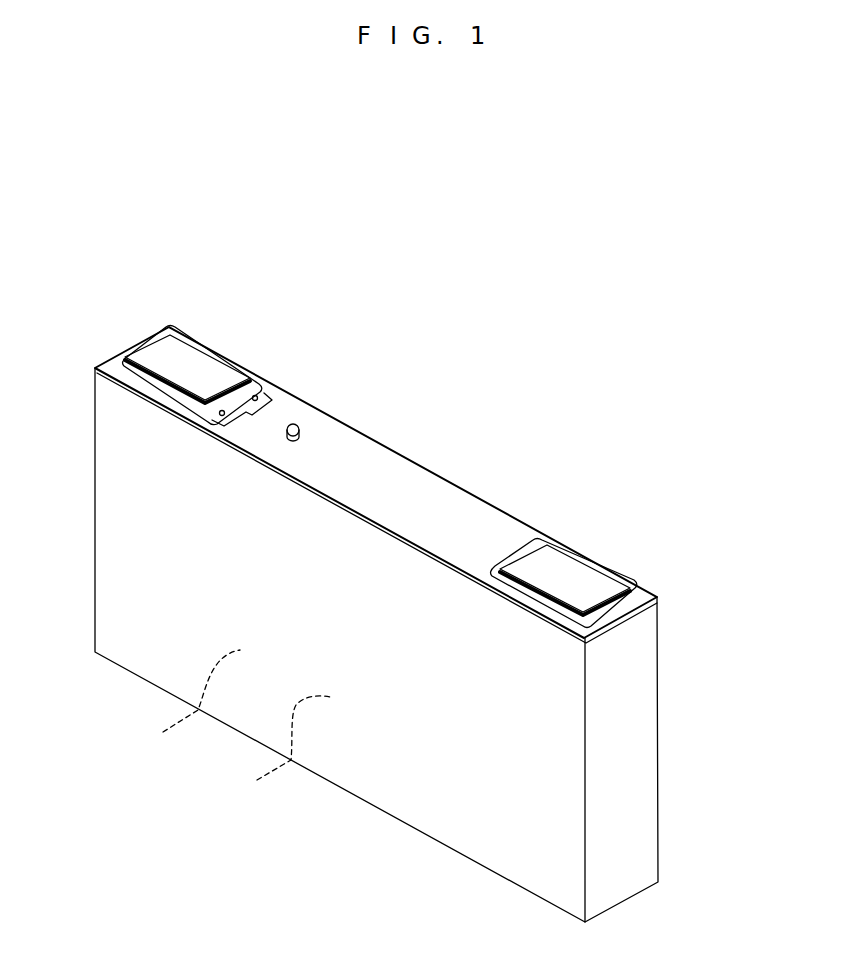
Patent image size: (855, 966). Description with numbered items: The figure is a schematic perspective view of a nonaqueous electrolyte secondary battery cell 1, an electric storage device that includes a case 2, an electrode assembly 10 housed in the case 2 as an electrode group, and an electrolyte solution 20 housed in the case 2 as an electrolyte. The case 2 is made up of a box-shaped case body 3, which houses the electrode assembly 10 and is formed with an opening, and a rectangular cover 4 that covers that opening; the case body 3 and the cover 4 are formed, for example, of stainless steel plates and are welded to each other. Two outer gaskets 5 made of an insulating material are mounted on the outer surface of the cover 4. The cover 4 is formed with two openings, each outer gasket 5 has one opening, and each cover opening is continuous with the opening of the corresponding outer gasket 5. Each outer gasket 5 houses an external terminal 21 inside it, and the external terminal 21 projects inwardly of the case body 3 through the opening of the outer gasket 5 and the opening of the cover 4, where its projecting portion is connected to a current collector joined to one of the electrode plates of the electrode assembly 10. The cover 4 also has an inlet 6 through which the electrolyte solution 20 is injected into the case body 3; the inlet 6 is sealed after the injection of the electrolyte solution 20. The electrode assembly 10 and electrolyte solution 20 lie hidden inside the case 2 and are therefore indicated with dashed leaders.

The nonaqueous electrolyte secondary battery cell 1 is at (478, 395).
The case 2 is at (758, 622).
The case body 3 is at (637, 680).
The cover 4 is at (640, 612).
The outer gasket 5 is at (137, 375).
The inlet 6 is at (291, 424).
The electrode assembly 10 is at (186, 701).
The electrolyte solution 20 is at (275, 749).
The external terminal 21 is at (175, 353).